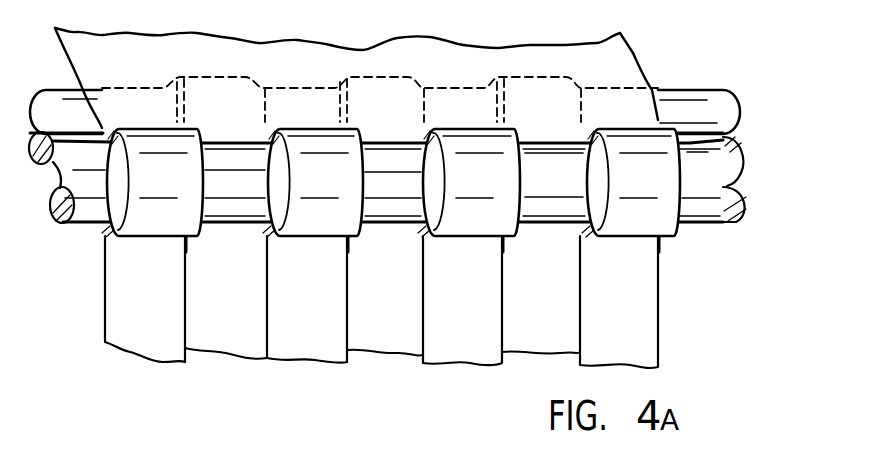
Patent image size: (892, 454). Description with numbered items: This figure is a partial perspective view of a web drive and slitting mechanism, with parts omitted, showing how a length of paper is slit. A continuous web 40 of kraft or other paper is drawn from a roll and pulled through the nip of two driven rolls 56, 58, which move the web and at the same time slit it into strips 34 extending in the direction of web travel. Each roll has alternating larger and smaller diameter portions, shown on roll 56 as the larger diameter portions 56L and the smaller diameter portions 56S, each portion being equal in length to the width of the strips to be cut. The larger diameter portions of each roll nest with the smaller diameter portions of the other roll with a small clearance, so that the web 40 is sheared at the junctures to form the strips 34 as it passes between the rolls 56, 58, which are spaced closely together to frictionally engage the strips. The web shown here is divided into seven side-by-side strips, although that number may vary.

The web 40 is at (630, 75).
The driven roll 58 is at (727, 120).
The driven roll 56 is at (747, 198).
The larger diameter portion 56L is at (320, 207).
The smaller diameter portion 56S is at (547, 190).
The strips 34 is at (287, 347).